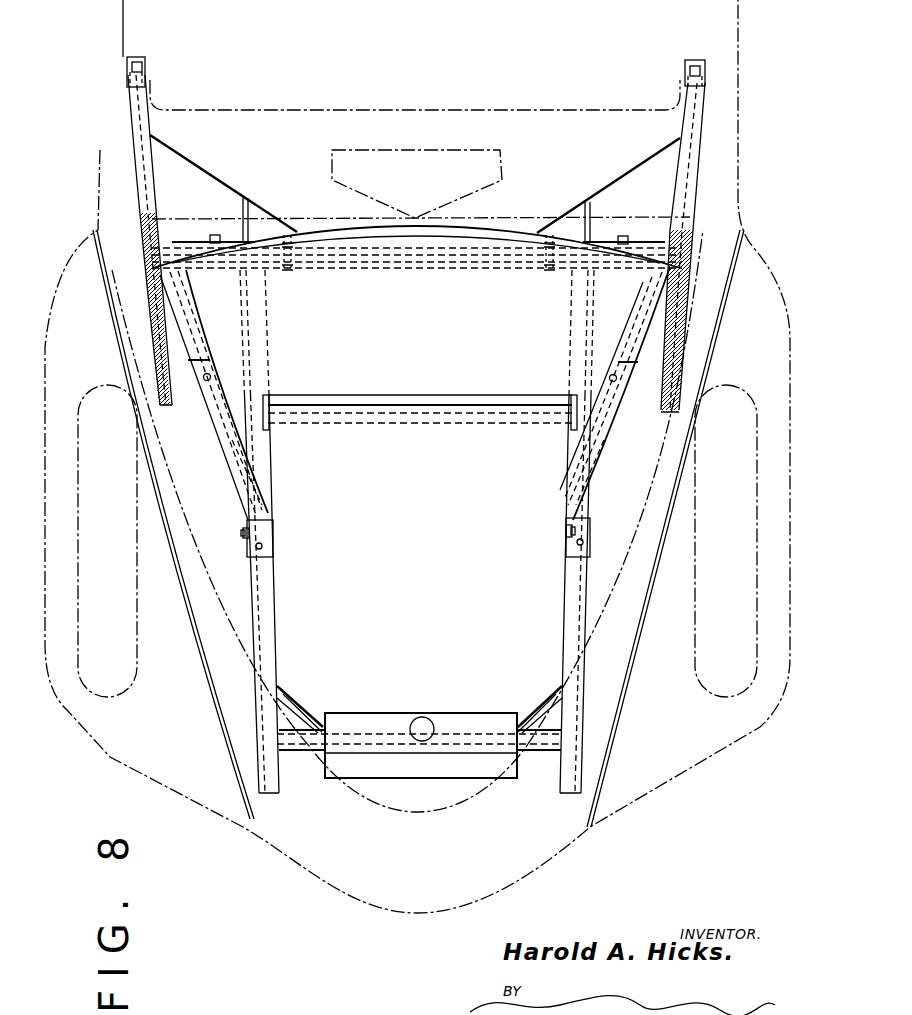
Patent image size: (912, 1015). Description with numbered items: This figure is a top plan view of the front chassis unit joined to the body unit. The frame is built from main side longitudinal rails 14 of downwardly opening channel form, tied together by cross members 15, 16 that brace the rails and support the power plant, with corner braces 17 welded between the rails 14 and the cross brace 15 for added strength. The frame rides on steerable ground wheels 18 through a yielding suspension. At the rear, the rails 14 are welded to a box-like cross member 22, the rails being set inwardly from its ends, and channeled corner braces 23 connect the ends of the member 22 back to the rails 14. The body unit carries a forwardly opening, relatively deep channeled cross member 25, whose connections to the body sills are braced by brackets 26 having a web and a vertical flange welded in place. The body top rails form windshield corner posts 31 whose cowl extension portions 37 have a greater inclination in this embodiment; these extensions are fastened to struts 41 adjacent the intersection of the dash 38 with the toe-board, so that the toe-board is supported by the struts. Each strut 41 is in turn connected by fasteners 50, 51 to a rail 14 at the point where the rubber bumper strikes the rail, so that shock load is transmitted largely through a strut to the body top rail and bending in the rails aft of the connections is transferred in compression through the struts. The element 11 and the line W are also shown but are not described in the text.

The rear cross member 11 is at (441, 763).
The main side longitudinal rail 14 is at (268, 627).
The cross member 15 is at (538, 740).
The cross member 16 is at (337, 418).
The corner brace 17 is at (527, 720).
The steerable ground wheel 18 is at (53, 392).
The cross member 22 is at (407, 268).
The channeled corner brace 23 is at (208, 350).
The channeled cross member 25 is at (345, 278).
The bracket 26 is at (227, 205).
The windshield corner post 31 is at (147, 65).
The cowl extension portion 37 is at (141, 306).
The dash 38 is at (313, 232).
The strut 41 is at (240, 445).
The fastener 50 is at (260, 545).
The fastener 51 is at (247, 533).
The body wall W is at (338, 118).